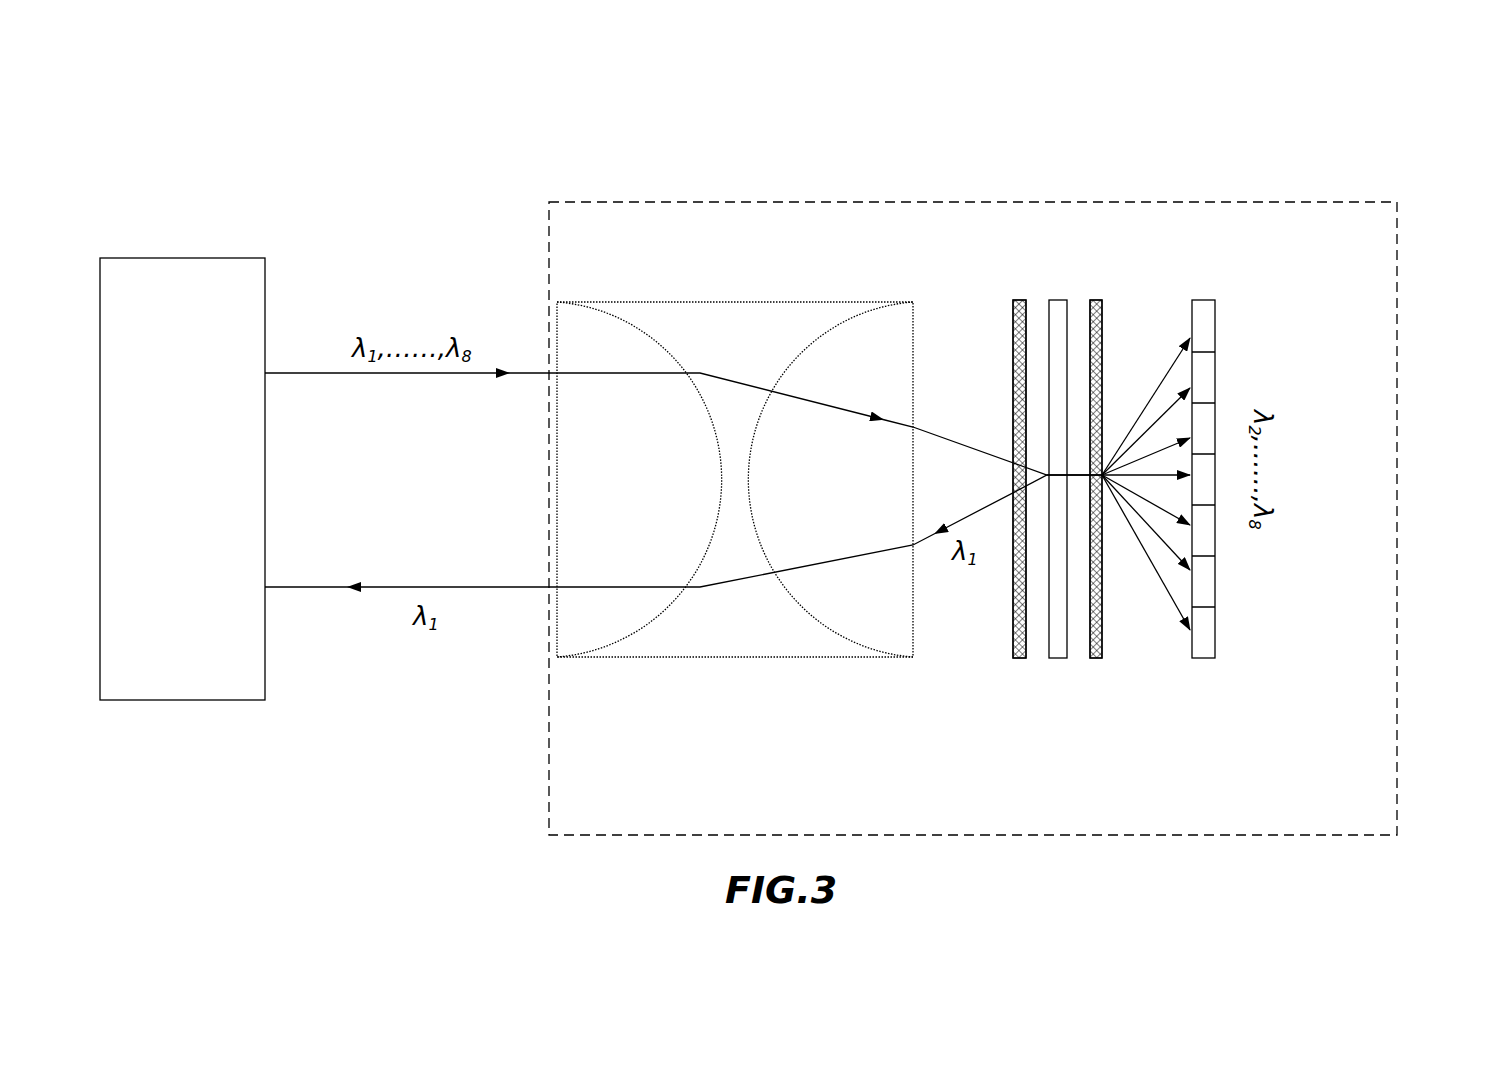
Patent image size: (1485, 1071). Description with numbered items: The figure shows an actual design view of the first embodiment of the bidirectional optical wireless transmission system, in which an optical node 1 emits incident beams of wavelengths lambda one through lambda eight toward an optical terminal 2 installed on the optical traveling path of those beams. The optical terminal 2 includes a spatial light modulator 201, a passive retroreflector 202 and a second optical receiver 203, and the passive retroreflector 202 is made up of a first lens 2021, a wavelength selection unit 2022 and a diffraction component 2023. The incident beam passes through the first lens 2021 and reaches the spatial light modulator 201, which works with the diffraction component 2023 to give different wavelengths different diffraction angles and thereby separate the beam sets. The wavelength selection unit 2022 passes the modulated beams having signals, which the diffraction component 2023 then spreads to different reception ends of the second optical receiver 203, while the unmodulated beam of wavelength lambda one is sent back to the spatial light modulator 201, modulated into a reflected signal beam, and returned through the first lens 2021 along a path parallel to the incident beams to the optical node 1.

The optical node 1 is at (187, 258).
The optical terminal 2 is at (1270, 202).
The spatial light modulator 201 is at (1018, 655).
The passive retroreflector 202 is at (650, 103).
The first lens 2021 is at (718, 335).
The wavelength selection unit 2022 is at (1058, 300).
The diffraction component 2023 is at (1097, 300).
The second optical receiver 203 is at (1215, 328).